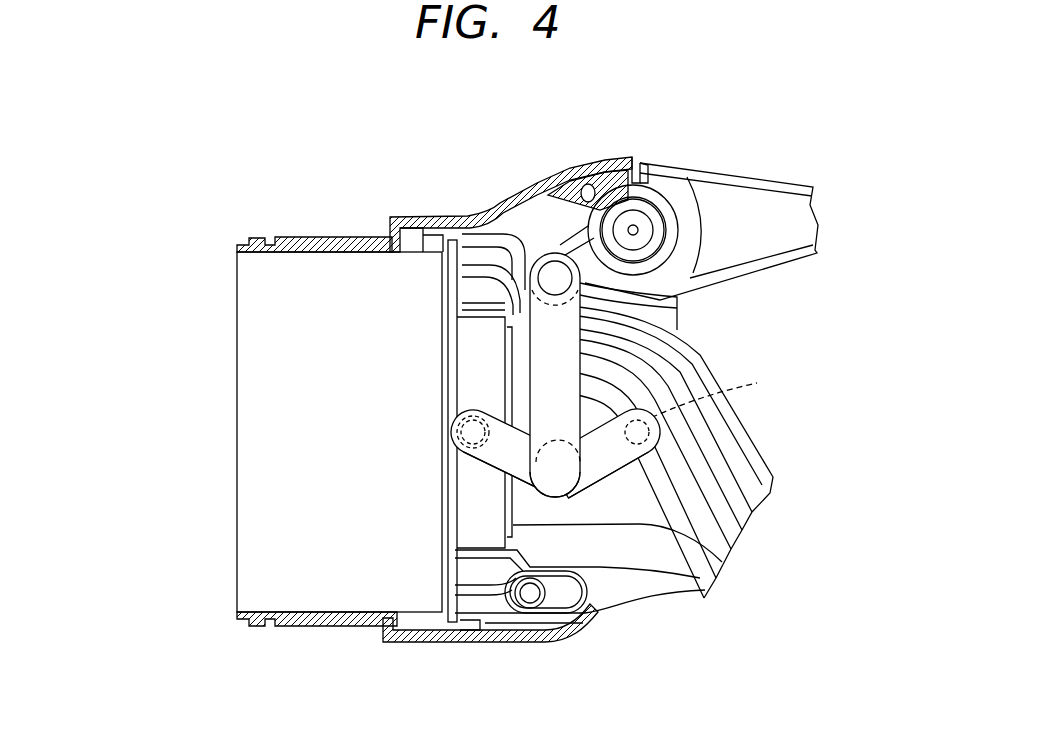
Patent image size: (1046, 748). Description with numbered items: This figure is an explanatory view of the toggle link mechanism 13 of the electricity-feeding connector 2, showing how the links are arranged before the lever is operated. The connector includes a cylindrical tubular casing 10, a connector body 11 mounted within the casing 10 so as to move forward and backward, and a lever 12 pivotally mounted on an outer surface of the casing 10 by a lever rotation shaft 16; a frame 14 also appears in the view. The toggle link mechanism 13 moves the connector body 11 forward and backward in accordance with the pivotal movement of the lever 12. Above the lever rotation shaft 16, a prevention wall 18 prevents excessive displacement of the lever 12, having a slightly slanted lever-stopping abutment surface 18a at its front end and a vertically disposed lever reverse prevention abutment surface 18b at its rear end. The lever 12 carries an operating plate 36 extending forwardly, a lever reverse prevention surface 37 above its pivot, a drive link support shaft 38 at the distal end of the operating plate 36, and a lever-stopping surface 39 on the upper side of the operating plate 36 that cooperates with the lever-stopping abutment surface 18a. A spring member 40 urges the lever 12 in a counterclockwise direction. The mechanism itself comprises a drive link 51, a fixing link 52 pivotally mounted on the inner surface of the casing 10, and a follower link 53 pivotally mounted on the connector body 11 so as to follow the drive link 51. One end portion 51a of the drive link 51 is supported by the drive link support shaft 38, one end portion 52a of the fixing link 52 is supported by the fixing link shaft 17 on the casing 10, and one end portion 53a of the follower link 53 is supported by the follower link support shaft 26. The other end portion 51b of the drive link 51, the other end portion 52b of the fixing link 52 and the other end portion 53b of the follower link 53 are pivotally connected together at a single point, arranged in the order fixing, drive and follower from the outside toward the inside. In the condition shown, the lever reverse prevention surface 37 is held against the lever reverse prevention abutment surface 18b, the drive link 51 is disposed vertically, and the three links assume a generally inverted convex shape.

The electricity-feeding connector 2 is at (305, 226).
The casing 10 is at (352, 230).
The connector body 11 is at (232, 324).
The lever 12 is at (762, 173).
The toggle link mechanism 13 is at (568, 506).
The frame 14 is at (781, 480).
The lever rotation shaft 16 is at (636, 226).
The fixing link shaft 17 is at (757, 383).
The prevention wall 18 is at (597, 178).
The lever-stopping abutment surface 18a is at (580, 192).
The lever reverse prevention abutment surface 18b is at (657, 167).
The follower link support shaft 26 is at (460, 425).
The operating plate 36 is at (560, 243).
The lever reverse prevention surface 37 is at (628, 168).
The drive link support shaft 38 is at (542, 267).
The lever-stopping surface 39 is at (542, 257).
The spring member 40 is at (675, 240).
The drive link 51 is at (580, 368).
The one end portion of the drive link 51a is at (655, 320).
The other end portion of the drive link 51b is at (540, 438).
The fixing link 52 is at (650, 478).
The one end portion of the fixing link 52a is at (640, 452).
The other end portion of the fixing link 52b is at (665, 522).
The follower link 53 is at (495, 455).
The one end portion of the follower link 53a is at (472, 437).
The other end portion of the follower link 53b is at (517, 483).